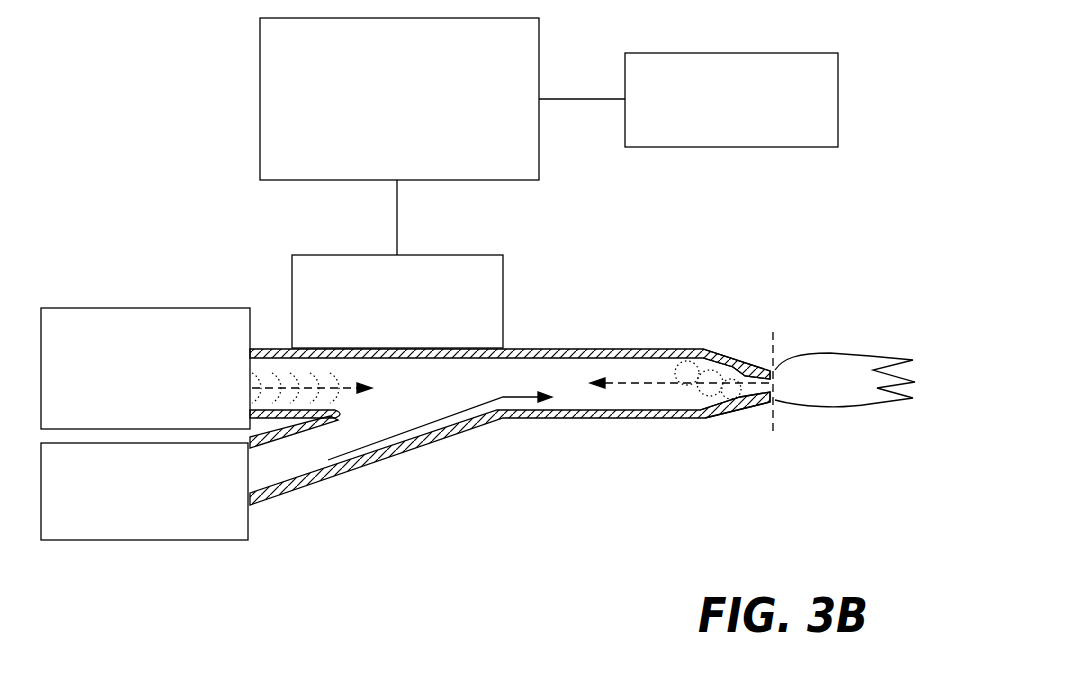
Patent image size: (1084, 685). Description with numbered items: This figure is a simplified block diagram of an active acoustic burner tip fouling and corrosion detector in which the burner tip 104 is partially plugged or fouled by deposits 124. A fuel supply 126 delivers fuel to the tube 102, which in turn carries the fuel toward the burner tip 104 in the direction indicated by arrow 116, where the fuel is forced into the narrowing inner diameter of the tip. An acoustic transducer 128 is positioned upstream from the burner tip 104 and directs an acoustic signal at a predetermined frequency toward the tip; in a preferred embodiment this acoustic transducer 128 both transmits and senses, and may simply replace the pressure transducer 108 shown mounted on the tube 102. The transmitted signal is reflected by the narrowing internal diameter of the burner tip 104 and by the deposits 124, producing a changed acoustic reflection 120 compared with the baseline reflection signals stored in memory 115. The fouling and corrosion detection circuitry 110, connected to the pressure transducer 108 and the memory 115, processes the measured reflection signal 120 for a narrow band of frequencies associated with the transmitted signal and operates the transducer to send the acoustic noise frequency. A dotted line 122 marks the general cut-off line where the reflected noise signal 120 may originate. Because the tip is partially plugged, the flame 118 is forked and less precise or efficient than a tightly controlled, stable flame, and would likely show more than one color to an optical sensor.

The tube 102 is at (563, 349).
The burner tip 104 is at (738, 342).
The pressure transducer 108 is at (445, 255).
The fouling and corrosion detection circuitry 110 is at (260, 100).
The memory 115 is at (690, 53).
The arrow 116 is at (427, 436).
The flame 118 is at (853, 372).
The acoustic reflection 120 is at (668, 362).
The dotted line 122 is at (777, 413).
The deposits 124 is at (750, 405).
The fuel supply 126 is at (160, 541).
The acoustic transducer 128 is at (145, 308).